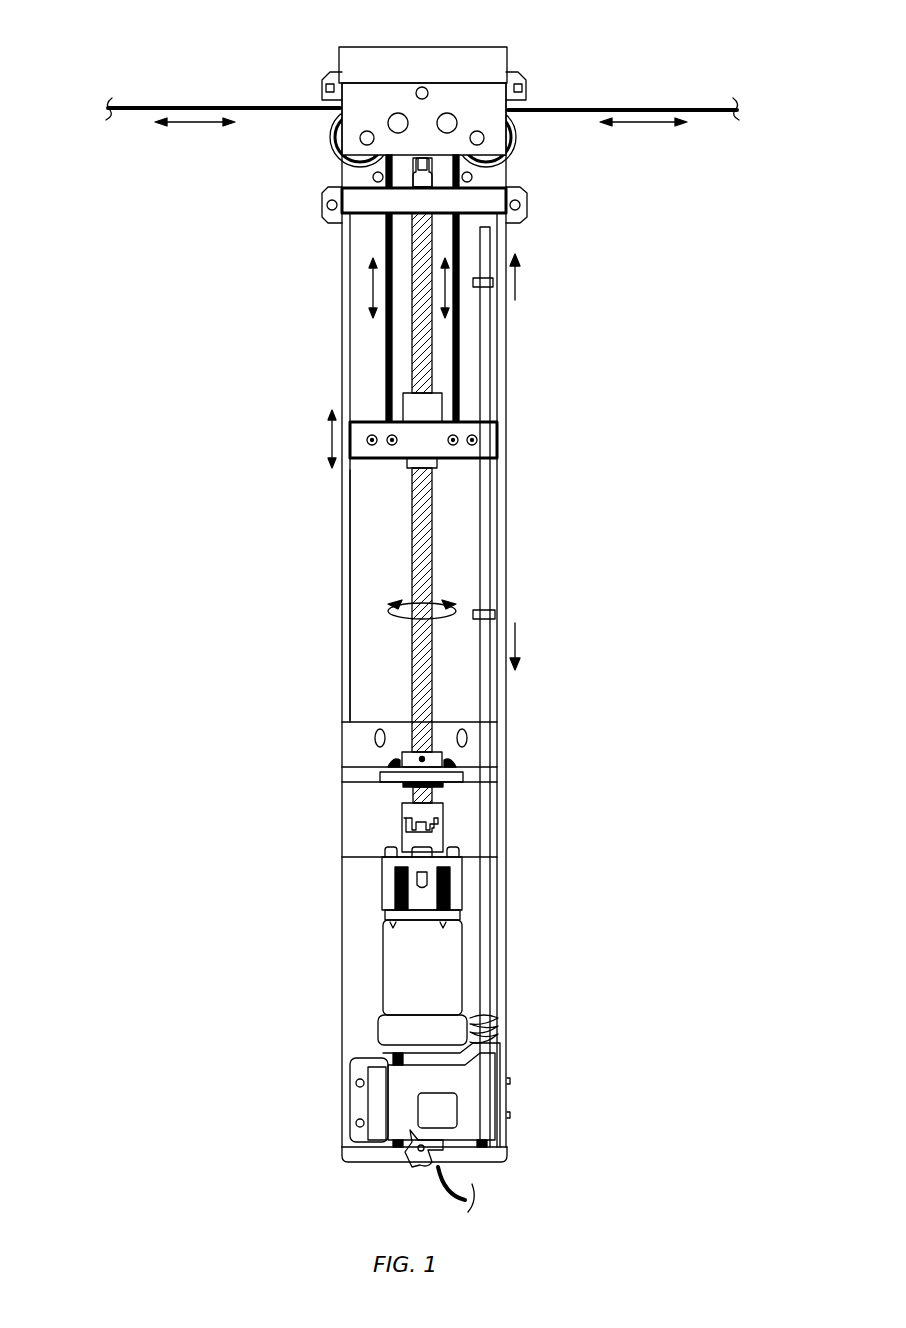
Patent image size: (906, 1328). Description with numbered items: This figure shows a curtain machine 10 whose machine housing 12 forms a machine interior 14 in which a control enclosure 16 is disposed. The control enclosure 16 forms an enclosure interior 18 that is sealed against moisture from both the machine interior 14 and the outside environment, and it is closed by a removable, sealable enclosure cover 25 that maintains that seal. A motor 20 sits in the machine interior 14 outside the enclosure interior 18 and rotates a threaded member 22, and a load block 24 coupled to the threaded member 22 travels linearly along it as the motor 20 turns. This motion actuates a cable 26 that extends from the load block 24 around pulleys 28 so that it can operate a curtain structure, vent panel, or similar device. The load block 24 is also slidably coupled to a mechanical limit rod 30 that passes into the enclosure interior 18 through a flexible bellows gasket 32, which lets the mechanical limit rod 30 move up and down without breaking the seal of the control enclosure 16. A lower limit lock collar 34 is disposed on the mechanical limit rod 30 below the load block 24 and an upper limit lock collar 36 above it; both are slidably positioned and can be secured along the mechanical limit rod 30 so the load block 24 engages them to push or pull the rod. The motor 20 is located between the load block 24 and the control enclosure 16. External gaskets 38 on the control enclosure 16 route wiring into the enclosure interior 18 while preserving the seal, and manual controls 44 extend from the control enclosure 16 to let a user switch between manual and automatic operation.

The curtain machine 10 is at (118, 44).
The machine housing 12 is at (507, 548).
The machine interior 14 is at (386, 573).
The control enclosure 16 is at (505, 1047).
The enclosure interior 18 is at (477, 1118).
The motor 20 is at (435, 963).
The threaded member 22 is at (432, 560).
The load block 24 is at (487, 430).
The enclosure cover 25 is at (485, 1085).
The cable 26 is at (183, 108).
The pulleys 28 is at (331, 148).
The mechanical limit rod 30 is at (487, 503).
The flexible bellows gasket 32 is at (500, 1020).
The lower limit lock collar 34 is at (474, 620).
The upper limit lock collar 36 is at (492, 287).
The external gaskets 38 is at (442, 1163).
The manual controls 44 is at (356, 1083).